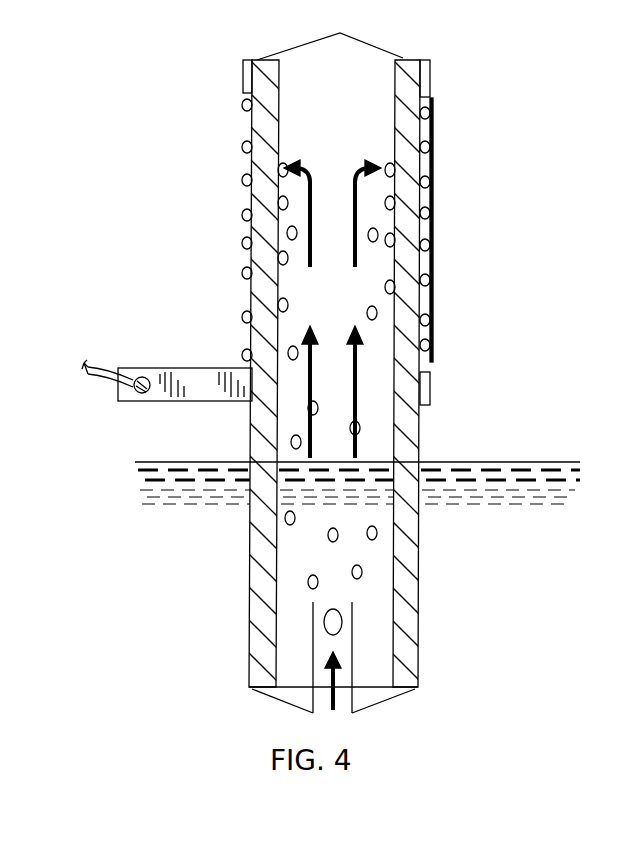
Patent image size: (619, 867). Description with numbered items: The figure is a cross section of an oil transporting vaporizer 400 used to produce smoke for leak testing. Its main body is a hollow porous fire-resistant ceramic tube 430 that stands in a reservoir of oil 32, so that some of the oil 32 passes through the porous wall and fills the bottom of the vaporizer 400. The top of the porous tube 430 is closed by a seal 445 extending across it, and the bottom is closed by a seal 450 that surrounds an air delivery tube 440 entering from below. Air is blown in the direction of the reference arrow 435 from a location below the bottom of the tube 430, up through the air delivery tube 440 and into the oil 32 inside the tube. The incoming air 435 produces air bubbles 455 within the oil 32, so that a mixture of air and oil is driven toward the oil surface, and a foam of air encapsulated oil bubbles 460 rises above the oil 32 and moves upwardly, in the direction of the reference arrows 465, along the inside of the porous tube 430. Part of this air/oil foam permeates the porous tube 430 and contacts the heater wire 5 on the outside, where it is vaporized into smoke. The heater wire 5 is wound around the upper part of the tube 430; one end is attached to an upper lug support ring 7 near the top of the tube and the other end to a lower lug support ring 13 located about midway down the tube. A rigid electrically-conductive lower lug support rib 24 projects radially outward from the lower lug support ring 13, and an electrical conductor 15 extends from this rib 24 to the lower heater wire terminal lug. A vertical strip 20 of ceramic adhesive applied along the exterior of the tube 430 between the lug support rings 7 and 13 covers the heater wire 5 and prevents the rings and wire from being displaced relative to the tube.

The heater wire 5 is at (246, 180).
The upper lug support ring 7 is at (426, 73).
The lower lug support ring 13 is at (432, 385).
The electrical conductor 15 is at (88, 372).
The adhesive strip 20 is at (433, 227).
The lower lug support rib 24 is at (200, 380).
The oil 32 is at (492, 462).
The oil transporting vaporizer 400 is at (487, 414).
The porous tube 430 is at (418, 607).
The incoming air 435 is at (333, 710).
The air delivery tube 440 is at (313, 635).
The seal 445 is at (320, 40).
The seal 450 is at (265, 697).
The air bubbles 455 is at (288, 520).
The air encapsulated oil bubbles 460 is at (280, 305).
The reference arrows 465 is at (312, 385).